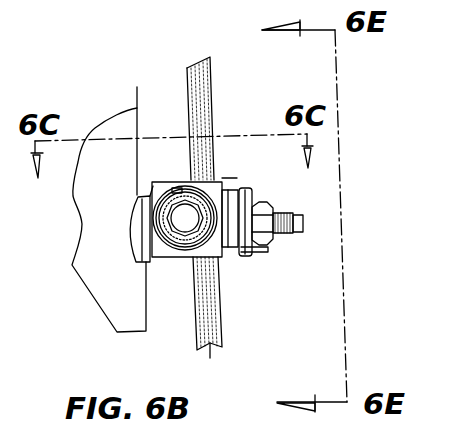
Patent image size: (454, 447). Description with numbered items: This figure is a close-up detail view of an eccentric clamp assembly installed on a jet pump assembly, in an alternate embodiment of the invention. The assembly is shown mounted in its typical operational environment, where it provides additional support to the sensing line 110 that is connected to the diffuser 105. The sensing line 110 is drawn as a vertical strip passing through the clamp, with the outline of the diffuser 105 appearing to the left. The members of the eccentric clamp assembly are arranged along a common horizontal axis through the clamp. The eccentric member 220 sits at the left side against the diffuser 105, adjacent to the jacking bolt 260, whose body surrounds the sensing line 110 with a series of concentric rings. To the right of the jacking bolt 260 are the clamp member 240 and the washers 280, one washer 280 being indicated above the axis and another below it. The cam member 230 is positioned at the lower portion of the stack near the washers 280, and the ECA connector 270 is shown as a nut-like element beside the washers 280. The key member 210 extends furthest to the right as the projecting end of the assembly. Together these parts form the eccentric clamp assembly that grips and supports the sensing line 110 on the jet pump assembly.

The diffuser 105 is at (123, 283).
The sensing line 110 is at (222, 329).
The key member 210 is at (305, 232).
The eccentric member 220 is at (147, 266).
The cam member 230 is at (238, 249).
The clamp member 240 is at (222, 180).
The jacking bolt 260 is at (154, 182).
The ECA connector 270 is at (266, 203).
The washer 280 is at (250, 189).